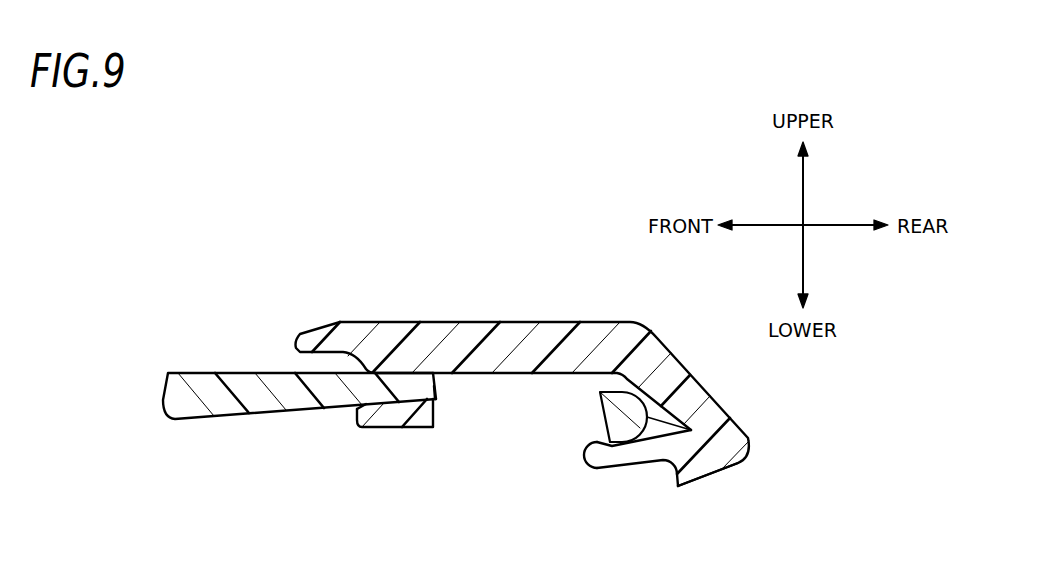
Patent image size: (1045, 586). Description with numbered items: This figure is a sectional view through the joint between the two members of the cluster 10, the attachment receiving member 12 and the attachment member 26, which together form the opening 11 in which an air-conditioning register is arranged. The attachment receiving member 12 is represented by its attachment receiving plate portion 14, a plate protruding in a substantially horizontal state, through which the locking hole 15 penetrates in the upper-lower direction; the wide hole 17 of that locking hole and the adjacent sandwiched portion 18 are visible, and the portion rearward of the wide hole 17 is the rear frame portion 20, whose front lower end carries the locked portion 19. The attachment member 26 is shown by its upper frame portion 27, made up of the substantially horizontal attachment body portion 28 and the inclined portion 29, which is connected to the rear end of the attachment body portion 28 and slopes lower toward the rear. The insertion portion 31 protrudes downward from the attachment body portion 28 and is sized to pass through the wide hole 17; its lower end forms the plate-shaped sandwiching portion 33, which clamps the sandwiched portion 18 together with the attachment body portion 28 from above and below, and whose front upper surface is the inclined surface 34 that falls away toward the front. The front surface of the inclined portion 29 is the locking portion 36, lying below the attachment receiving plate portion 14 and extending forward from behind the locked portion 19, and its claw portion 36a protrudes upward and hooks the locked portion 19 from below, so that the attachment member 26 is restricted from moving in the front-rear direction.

The cluster 10 is at (143, 385).
The opening 11 is at (662, 525).
The attachment receiving member 12 is at (206, 368).
The attachment receiving plate portion 14 is at (229, 407).
The locking hole 15 is at (454, 441).
The wide hole 17 is at (440, 387).
The sandwiched portion 18 is at (403, 384).
The locked portion 19 is at (600, 433).
The rear frame portion 20 is at (722, 468).
The attachment member 26 is at (706, 374).
The upper frame portion 27 is at (693, 265).
The attachment body portion 28 is at (553, 330).
The inclined portion 29 is at (688, 350).
The insertion portion 31 is at (394, 456).
The sandwiching portion 33 is at (384, 416).
The inclined surface 34 is at (357, 411).
The locking portion 36 is at (625, 458).
The claw portion 36a is at (593, 443).